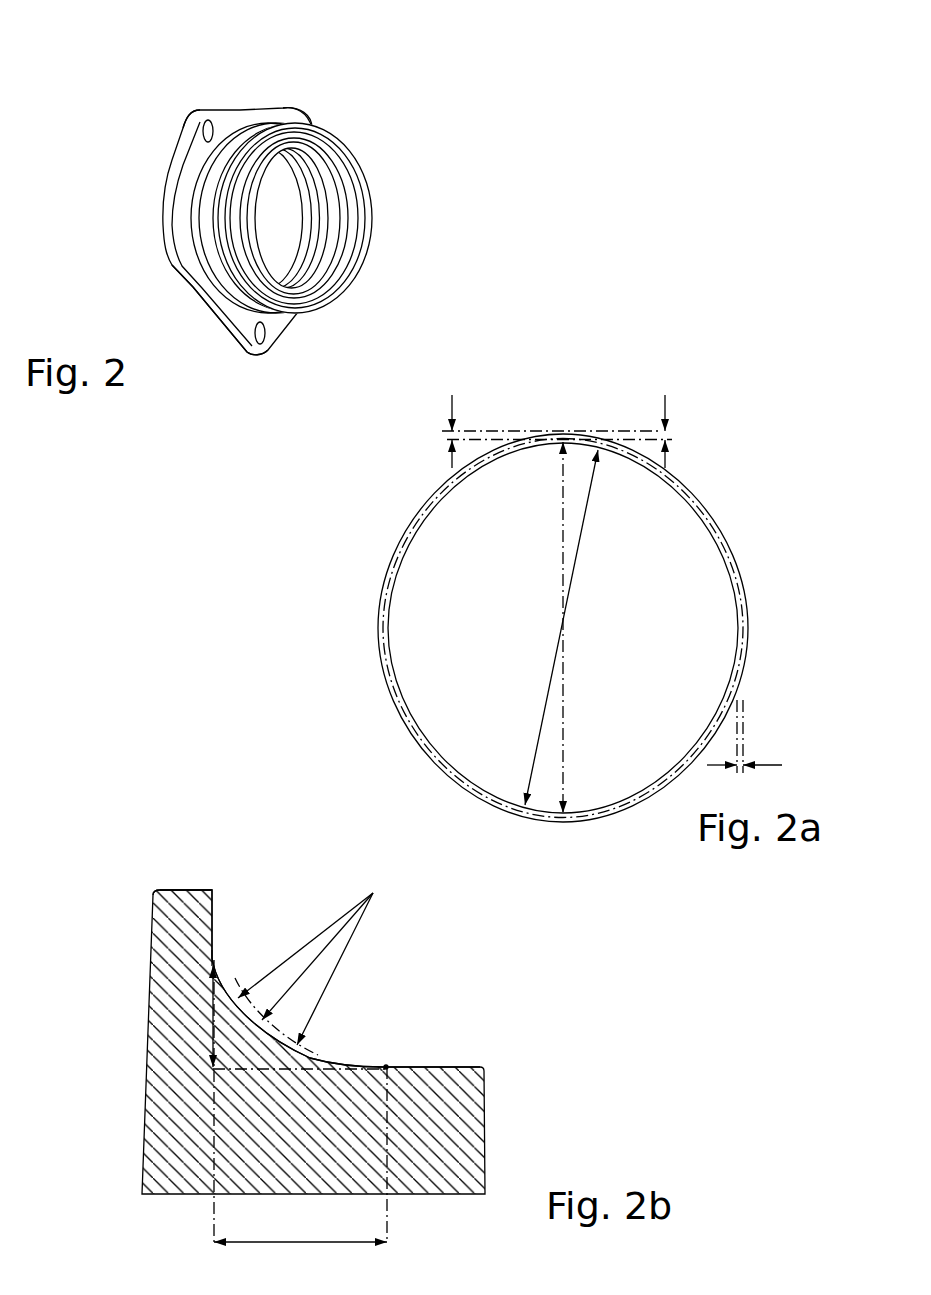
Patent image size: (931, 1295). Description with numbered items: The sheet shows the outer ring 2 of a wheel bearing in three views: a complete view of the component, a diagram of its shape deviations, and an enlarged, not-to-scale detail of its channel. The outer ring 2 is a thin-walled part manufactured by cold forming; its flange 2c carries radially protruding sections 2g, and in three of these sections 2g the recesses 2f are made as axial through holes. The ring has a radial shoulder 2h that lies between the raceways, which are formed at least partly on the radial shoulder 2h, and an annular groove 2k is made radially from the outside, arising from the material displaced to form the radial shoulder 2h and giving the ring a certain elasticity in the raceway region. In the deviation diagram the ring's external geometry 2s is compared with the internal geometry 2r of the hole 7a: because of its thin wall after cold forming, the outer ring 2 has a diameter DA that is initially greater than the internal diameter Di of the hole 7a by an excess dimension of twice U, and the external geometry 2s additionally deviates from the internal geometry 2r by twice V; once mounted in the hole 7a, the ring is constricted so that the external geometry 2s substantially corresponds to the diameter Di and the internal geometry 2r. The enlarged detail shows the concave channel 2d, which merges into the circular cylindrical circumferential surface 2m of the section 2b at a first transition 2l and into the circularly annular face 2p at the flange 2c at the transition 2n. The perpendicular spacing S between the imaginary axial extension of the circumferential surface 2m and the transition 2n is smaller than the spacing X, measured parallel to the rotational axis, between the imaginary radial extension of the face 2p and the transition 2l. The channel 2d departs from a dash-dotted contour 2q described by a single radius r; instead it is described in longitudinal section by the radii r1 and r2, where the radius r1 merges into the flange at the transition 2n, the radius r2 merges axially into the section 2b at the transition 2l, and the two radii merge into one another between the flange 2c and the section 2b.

In FIG. 2, the outer ring 2 is at (280, 229).
In FIG. 2, the section 2b is at (243, 130).
In FIG. 2B, the section 2b is at (443, 1138).
In FIG. 2, the flange 2c is at (203, 283).
In FIG. 2B, the flange 2c is at (180, 940).
In FIG. 2, the channel 2d is at (193, 183).
In FIG. 2B, the channel 2d is at (375, 935).
In FIG. 2, the recesses 2f is at (207, 120).
In FIG. 2, the radially protruding sections 2g is at (190, 143).
In FIG. 2, the radial shoulder 2h is at (330, 240).
In FIG. 2, the annular groove 2k is at (217, 207).
In FIG. 2A, the external geometry 2s is at (562, 431).
In FIG. 2A, the hole 7a is at (563, 628).
In FIG. 2A, the internal geometry 2r is at (625, 453).
In FIG. 2A, the deviation amount V is at (442, 434).
In FIG. 2A, the excess dimension U is at (672, 437).
In FIG. 2A, the diameter of the external geometry DA is at (565, 670).
In FIG. 2A, the internal diameter of the hole Di is at (550, 688).
In FIG. 2B, the circularly annular face 2p is at (212, 913).
In FIG. 2B, the contour 2q is at (235, 978).
In FIG. 2B, the transition 2n is at (210, 968).
In FIG. 2B, the perpendicular spacing S is at (212, 1023).
In FIG. 2B, the radius r1 is at (300, 947).
In FIG. 2B, the radius r is at (318, 957).
In FIG. 2B, the radius r2 is at (330, 983).
In FIG. 2B, the first transition 2l is at (387, 1065).
In FIG. 2B, the circumferential surface 2m is at (420, 1067).
In FIG. 2B, the spacing X is at (300, 1229).